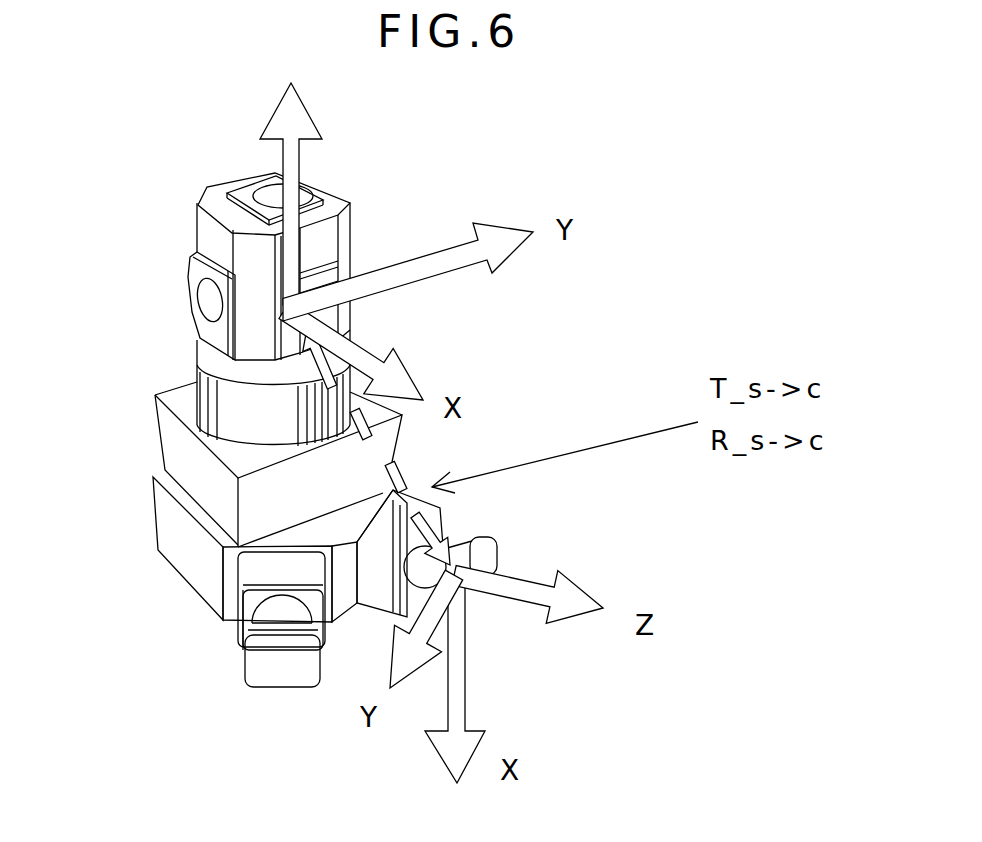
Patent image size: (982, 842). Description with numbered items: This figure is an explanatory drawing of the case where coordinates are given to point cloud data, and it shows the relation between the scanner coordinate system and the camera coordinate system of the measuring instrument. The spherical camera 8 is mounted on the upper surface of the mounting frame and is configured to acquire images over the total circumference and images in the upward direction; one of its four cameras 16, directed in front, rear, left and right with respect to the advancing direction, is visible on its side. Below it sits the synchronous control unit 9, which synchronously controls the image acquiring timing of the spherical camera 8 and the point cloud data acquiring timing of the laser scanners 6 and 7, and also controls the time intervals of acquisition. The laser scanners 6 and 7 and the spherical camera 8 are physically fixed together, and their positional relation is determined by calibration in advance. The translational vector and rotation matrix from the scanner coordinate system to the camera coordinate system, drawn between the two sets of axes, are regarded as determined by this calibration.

The spherical camera 8 is at (340, 194).
The camera 16 is at (190, 312).
The synchronous control unit 9 is at (173, 567).
The laser scanner 7 is at (245, 680).
The laser scanner 6 is at (488, 540).